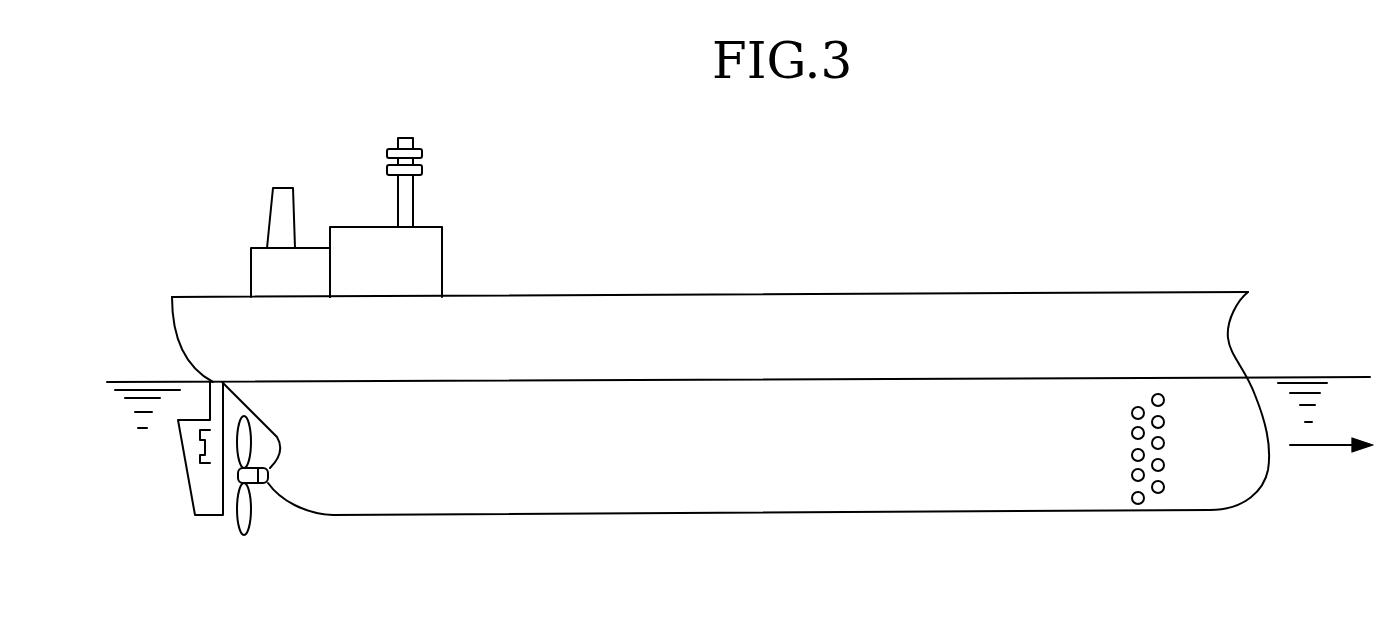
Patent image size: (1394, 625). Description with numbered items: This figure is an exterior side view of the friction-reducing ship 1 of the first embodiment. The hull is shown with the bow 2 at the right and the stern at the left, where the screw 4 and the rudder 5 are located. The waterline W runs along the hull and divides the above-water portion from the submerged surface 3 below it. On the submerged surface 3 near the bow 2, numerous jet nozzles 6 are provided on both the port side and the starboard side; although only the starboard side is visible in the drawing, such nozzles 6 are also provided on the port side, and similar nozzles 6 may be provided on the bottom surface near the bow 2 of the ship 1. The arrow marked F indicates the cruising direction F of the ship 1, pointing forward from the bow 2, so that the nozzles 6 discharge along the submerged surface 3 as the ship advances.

The ship 1 is at (750, 295).
The bow 2 is at (1255, 462).
The submerged surface 3 is at (528, 505).
The screw 4 is at (245, 520).
The rudder 5 is at (200, 490).
The jet nozzles 6 is at (1176, 397).
The waterline W is at (700, 380).
The cruising direction F is at (1317, 447).